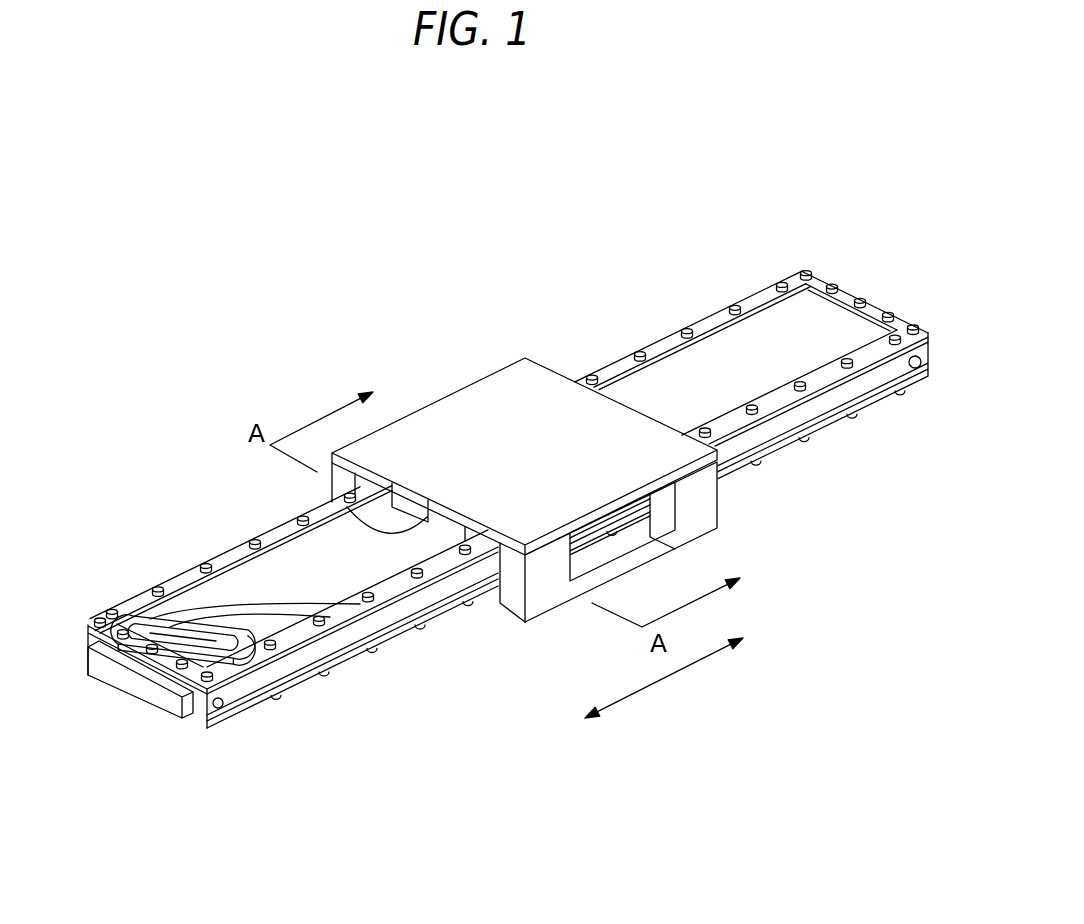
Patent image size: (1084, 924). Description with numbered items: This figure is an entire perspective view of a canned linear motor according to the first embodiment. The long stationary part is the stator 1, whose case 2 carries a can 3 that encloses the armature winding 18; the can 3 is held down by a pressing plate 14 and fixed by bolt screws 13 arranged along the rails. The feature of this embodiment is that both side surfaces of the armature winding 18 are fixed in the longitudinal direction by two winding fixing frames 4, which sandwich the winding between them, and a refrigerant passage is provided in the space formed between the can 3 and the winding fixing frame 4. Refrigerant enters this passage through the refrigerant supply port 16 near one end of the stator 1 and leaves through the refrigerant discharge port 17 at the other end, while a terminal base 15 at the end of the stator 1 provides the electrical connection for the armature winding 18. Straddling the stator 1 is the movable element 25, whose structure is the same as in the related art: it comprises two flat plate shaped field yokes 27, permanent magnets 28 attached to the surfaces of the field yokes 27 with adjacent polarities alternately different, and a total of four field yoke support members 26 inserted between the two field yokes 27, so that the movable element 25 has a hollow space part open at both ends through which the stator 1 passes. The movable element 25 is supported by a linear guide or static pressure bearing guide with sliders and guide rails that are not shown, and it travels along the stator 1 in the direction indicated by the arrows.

The stator 1 is at (501, 515).
The case 2 is at (430, 600).
The can 3 is at (370, 602).
The winding fixing frame 4 is at (274, 630).
The bolt screw for fixing the can 13 is at (638, 355).
The pressing plate 14 is at (694, 325).
The terminal base 15 is at (143, 692).
The refrigerant supply port 16 is at (224, 704).
The refrigerant discharge port 17 is at (921, 371).
The armature winding 18 is at (166, 622).
The movable element 25 is at (503, 477).
The field yoke support member 26 is at (702, 504).
The field yoke 27 is at (490, 400).
The permanent magnet 28 is at (335, 504).